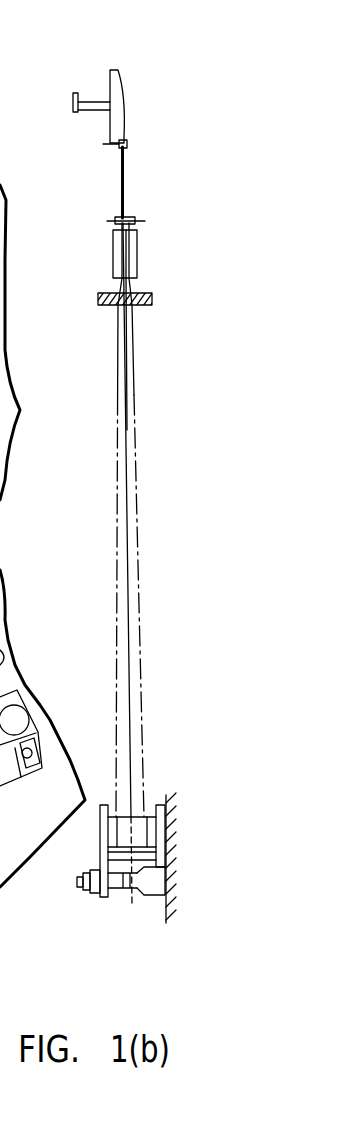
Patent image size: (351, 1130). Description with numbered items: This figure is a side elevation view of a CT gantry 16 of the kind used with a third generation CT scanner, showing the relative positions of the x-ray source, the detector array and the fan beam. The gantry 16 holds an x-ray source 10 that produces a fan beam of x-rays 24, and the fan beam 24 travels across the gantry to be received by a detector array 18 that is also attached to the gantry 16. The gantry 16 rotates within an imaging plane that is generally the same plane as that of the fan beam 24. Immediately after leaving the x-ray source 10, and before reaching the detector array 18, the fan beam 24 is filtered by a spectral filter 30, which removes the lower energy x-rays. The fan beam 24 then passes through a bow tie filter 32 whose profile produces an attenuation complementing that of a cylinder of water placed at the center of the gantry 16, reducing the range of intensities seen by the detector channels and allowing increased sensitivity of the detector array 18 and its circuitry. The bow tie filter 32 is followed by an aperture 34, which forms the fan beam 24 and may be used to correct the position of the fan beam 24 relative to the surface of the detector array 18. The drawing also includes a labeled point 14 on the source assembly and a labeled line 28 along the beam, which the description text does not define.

The x-ray source 10 is at (128, 65).
The focal point 14 is at (127, 143).
The CT gantry 16 is at (166, 922).
The detector array 18 is at (99, 830).
The fan beam of x-rays 24 is at (143, 652).
The beam axis 28 is at (133, 750).
The spectral filter 30 is at (115, 218).
The bow tie filter 32 is at (112, 237).
The aperture 34 is at (95, 298).